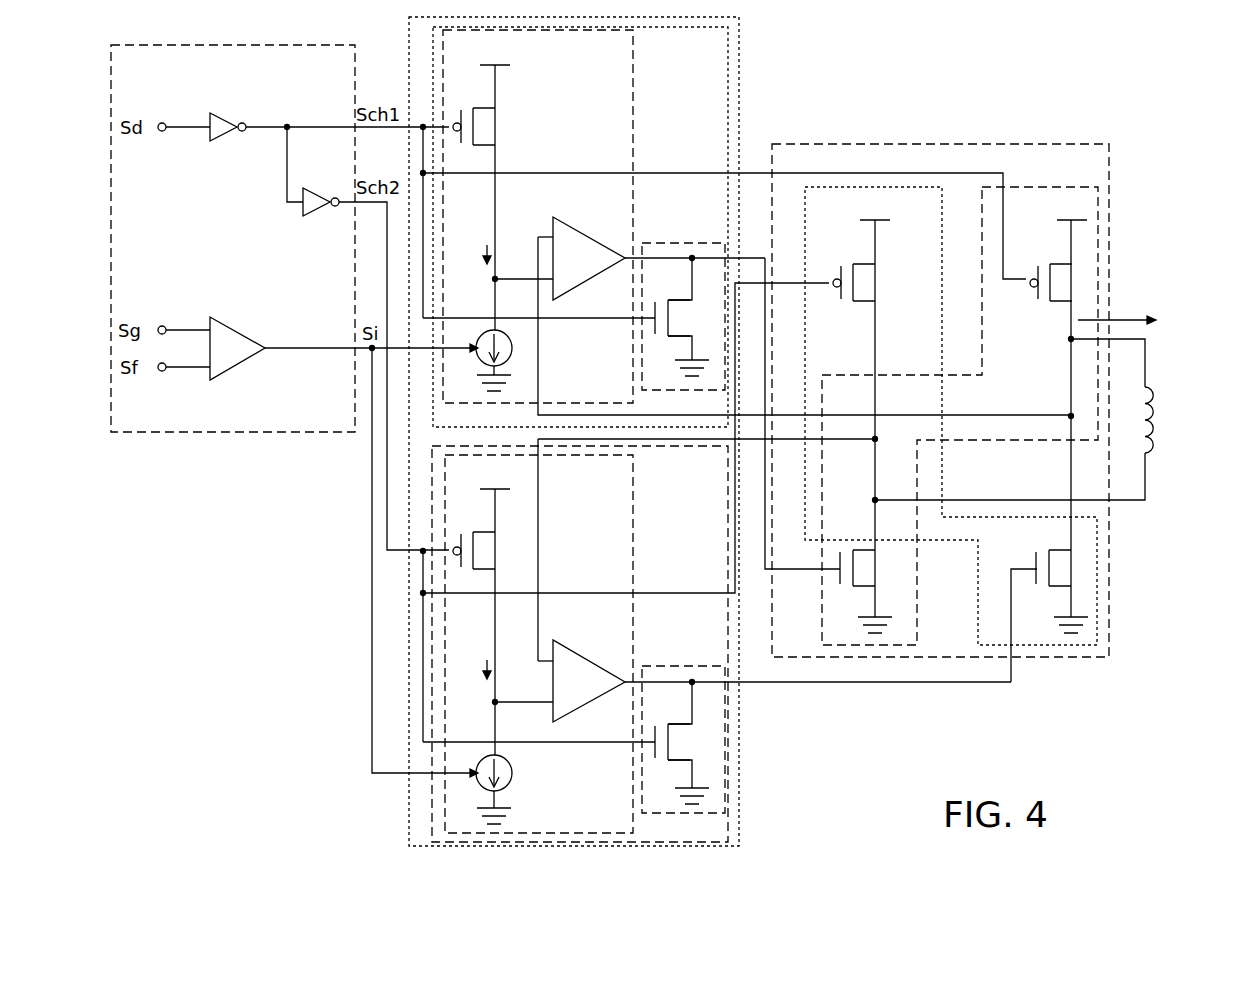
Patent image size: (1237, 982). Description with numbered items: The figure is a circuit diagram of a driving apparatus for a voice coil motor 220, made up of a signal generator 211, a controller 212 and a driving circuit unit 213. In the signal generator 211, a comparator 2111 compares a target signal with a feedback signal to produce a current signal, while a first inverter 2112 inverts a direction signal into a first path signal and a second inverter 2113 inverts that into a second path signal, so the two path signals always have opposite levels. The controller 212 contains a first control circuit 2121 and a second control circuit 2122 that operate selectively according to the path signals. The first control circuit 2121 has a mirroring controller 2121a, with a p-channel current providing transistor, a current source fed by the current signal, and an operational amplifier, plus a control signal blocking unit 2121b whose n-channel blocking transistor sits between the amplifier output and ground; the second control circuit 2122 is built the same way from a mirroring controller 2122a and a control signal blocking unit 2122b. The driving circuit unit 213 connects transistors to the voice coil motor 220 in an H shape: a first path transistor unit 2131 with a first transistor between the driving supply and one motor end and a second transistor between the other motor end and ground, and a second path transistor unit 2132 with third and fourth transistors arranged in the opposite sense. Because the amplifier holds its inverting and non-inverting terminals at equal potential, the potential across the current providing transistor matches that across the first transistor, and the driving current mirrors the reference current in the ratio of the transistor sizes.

The signal generator 211 is at (168, 432).
The comparator 2111 is at (255, 318).
The first inverter 2112 is at (237, 96).
The second inverter 2113 is at (325, 170).
The controller 212 is at (409, 632).
The first control circuit 2121 is at (629, 226).
The mirroring controller 2121a is at (634, 90).
The control signal blocking unit 2121b is at (672, 243).
The second control circuit 2122 is at (717, 644).
The mirroring controller 2122a is at (634, 512).
The control signal blocking unit 2122b is at (672, 666).
The driving circuit unit 213 is at (964, 411).
The first path transistor unit 2131 is at (1037, 187).
The second path transistor unit 2132 is at (915, 187).
The voice coil motor 220 is at (1158, 415).